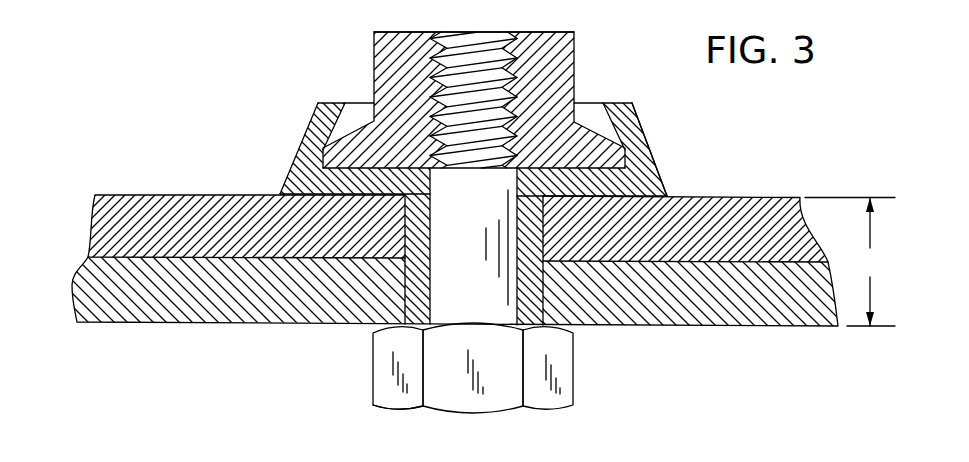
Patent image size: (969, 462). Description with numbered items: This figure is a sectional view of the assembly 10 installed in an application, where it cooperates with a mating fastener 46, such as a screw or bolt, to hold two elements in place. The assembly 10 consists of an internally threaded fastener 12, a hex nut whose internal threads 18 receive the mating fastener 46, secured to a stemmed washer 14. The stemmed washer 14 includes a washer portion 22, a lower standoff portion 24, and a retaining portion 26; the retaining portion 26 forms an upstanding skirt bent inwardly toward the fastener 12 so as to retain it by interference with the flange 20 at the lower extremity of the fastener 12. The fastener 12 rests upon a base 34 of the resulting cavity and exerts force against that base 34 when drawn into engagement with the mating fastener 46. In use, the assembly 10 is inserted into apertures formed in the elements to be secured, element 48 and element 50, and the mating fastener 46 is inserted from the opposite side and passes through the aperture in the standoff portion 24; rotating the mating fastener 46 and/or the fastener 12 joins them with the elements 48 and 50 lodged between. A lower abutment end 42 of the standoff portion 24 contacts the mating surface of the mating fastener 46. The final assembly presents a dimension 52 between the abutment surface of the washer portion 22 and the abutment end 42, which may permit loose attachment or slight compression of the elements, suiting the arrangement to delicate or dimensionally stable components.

The assembly 10 is at (322, 57).
The internally threaded fastener 12 is at (575, 41).
The stemmed washer 14 is at (667, 185).
The internal threads 18 is at (473, 33).
The flange 20 is at (609, 117).
The washer portion 22 is at (337, 176).
The lower standoff portion 24 is at (410, 306).
The retaining portion 26 is at (308, 127).
The base 34 is at (677, 205).
The lower abutment end 42 is at (530, 325).
The mating fastener 46 is at (412, 411).
The element 48 is at (92, 221).
The element 50 is at (92, 307).
The dimension 52 is at (850, 262).